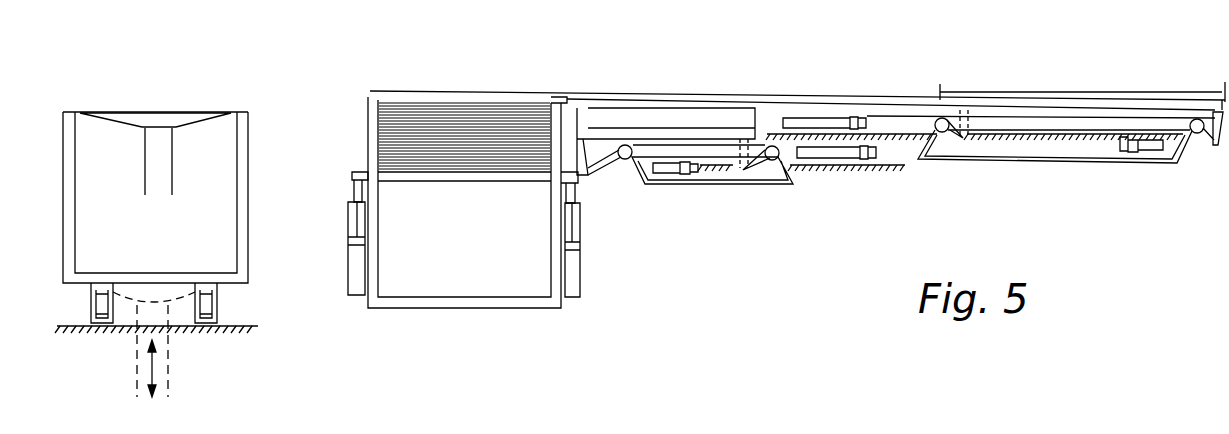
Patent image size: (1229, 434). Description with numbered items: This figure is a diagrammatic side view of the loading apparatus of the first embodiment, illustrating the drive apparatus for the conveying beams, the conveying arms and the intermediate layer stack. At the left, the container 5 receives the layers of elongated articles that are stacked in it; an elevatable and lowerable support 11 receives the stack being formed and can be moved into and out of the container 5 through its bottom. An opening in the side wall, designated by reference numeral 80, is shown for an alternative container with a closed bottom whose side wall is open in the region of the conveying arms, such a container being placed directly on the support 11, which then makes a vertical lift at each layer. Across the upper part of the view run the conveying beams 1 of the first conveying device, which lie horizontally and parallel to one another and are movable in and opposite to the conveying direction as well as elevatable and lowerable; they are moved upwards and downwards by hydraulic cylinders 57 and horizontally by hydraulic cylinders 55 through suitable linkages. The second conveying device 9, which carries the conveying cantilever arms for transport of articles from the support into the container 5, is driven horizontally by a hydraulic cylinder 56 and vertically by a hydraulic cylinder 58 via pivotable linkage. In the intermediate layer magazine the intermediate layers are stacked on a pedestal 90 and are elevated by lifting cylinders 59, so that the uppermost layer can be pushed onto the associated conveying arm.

The conveying beams 1 is at (723, 103).
The container 5 is at (245, 185).
The second conveying device 9 is at (582, 108).
The elevatable and lowerable support 11 is at (220, 287).
The hydraulic cylinders 55 is at (822, 118).
The hydraulic cylinder 56 is at (845, 160).
The hydraulic cylinders 57 is at (1133, 152).
The hydraulic cylinder 58 is at (683, 176).
The lifting cylinders 59 is at (348, 273).
The opening in the side wall 80 is at (243, 212).
The pedestal 90 is at (352, 172).